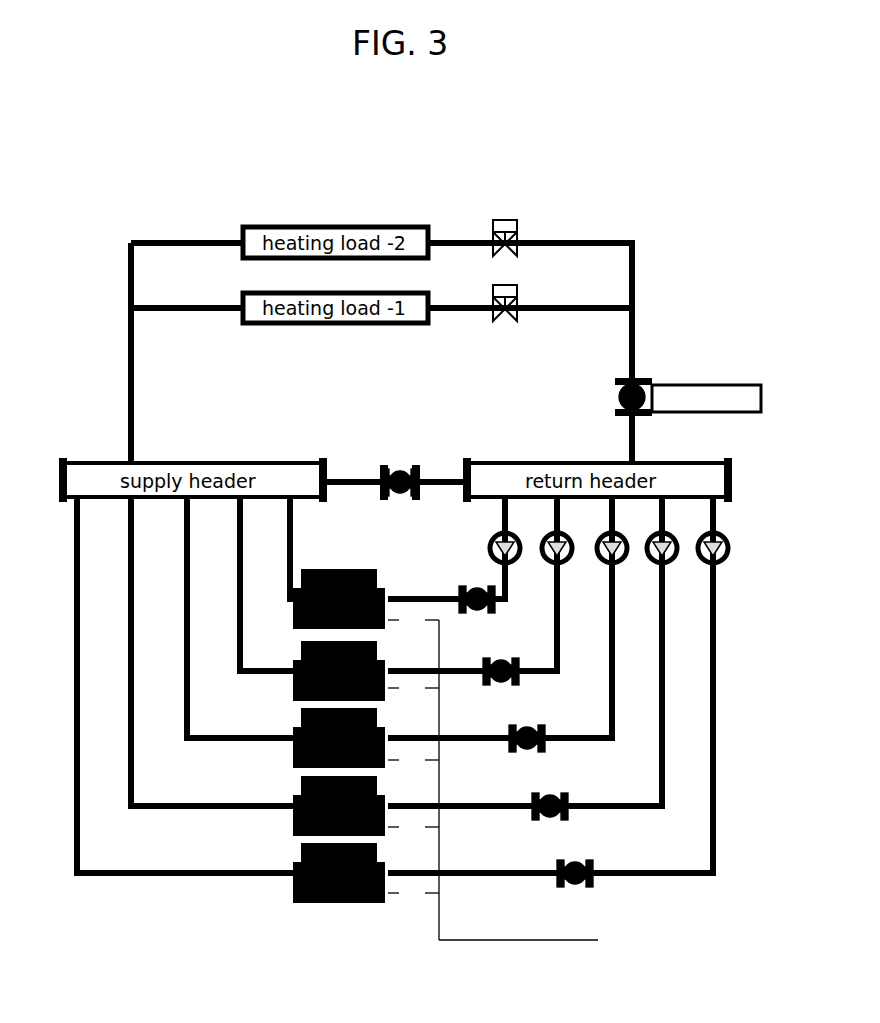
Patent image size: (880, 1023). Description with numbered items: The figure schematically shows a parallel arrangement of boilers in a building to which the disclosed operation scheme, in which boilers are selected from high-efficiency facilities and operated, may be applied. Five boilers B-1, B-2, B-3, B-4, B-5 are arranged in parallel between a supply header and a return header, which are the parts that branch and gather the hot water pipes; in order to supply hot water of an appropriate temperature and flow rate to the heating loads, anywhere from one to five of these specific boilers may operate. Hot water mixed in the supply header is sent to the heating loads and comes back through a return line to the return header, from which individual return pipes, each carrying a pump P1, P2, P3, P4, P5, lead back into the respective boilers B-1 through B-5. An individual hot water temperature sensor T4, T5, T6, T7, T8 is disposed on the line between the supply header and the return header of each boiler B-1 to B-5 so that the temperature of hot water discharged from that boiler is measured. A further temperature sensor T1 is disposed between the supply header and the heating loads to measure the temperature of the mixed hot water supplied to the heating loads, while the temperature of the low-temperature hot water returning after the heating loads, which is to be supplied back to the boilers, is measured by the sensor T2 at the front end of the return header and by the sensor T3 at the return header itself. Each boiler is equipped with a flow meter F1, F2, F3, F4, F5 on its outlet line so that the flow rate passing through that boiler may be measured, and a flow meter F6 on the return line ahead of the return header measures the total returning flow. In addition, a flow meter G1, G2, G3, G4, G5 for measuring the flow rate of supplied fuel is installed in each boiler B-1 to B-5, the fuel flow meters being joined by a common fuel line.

The temperature sensor T1 is at (134, 355).
The temperature sensor T2 is at (635, 343).
The temperature sensor T3 is at (693, 461).
The individual hot water temperature sensor T4 is at (293, 522).
The individual hot water temperature sensor T5 is at (243, 545).
The individual hot water temperature sensor T6 is at (190, 578).
The individual hot water temperature sensor T7 is at (134, 615).
The individual hot water temperature sensor T8 is at (80, 650).
The flow meter F1 is at (477, 612).
The flow meter F2 is at (501, 683).
The flow meter F3 is at (527, 751).
The flow meter F4 is at (550, 819).
The flow meter F5 is at (575, 886).
The flow meter F6 is at (671, 397).
The fuel flow meter G1 is at (411, 620).
The fuel flow meter G2 is at (411, 688).
The fuel flow meter G3 is at (411, 760).
The fuel flow meter G4 is at (411, 827).
The fuel flow meter G5 is at (411, 893).
The pump P1 is at (491, 534).
The pump P2 is at (545, 534).
The pump P3 is at (599, 534).
The pump P4 is at (650, 534).
The pump P5 is at (700, 534).
The boiler B-1 is at (339, 599).
The boiler B-2 is at (339, 671).
The boiler B-3 is at (339, 738).
The boiler B-4 is at (339, 806).
The boiler B-5 is at (339, 873).